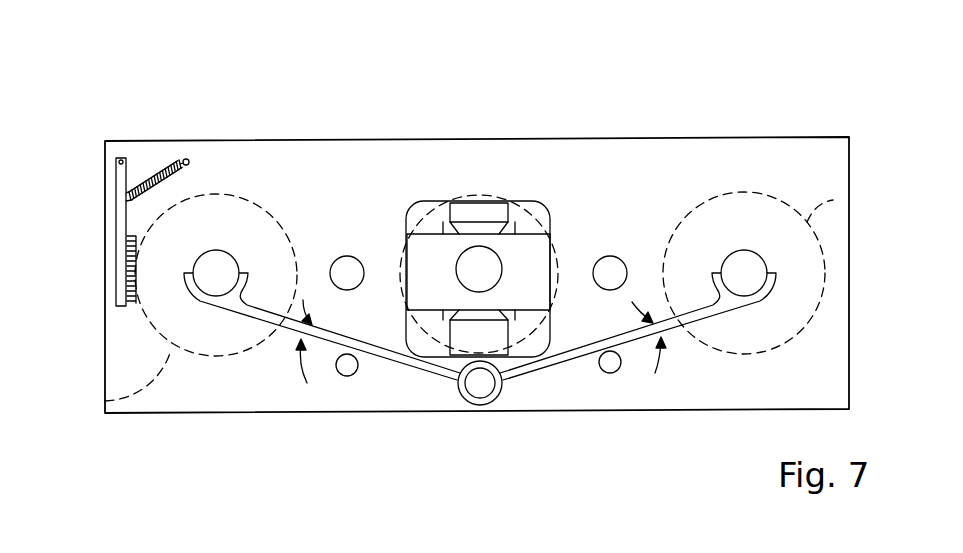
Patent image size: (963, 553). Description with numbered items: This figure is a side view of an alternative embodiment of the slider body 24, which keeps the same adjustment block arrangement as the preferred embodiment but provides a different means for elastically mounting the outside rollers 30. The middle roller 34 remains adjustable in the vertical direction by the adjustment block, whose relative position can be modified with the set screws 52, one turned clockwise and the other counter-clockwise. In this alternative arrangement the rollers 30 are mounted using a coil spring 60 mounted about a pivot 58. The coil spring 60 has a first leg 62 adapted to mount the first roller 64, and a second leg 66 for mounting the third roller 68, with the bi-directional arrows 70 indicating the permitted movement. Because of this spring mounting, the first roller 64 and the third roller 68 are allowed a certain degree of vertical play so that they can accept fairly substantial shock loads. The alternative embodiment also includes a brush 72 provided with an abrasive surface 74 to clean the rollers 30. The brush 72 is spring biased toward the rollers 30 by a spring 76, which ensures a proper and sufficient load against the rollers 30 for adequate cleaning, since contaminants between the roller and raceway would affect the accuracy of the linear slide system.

The slider body 24 is at (600, 157).
The rollers 30 is at (265, 198).
The middle roller 34 is at (485, 194).
The set screws 52 is at (470, 213).
The pivot 58 is at (482, 387).
The coil spring 60 is at (480, 393).
The first leg 62 is at (377, 358).
The first roller 64 is at (105, 401).
The second leg 66 is at (547, 367).
The third roller 68 is at (833, 200).
The bi-directional arrows 70 is at (298, 360).
The brush 72 is at (118, 220).
The abrasive surface 74 is at (132, 306).
The spring 76 is at (163, 163).